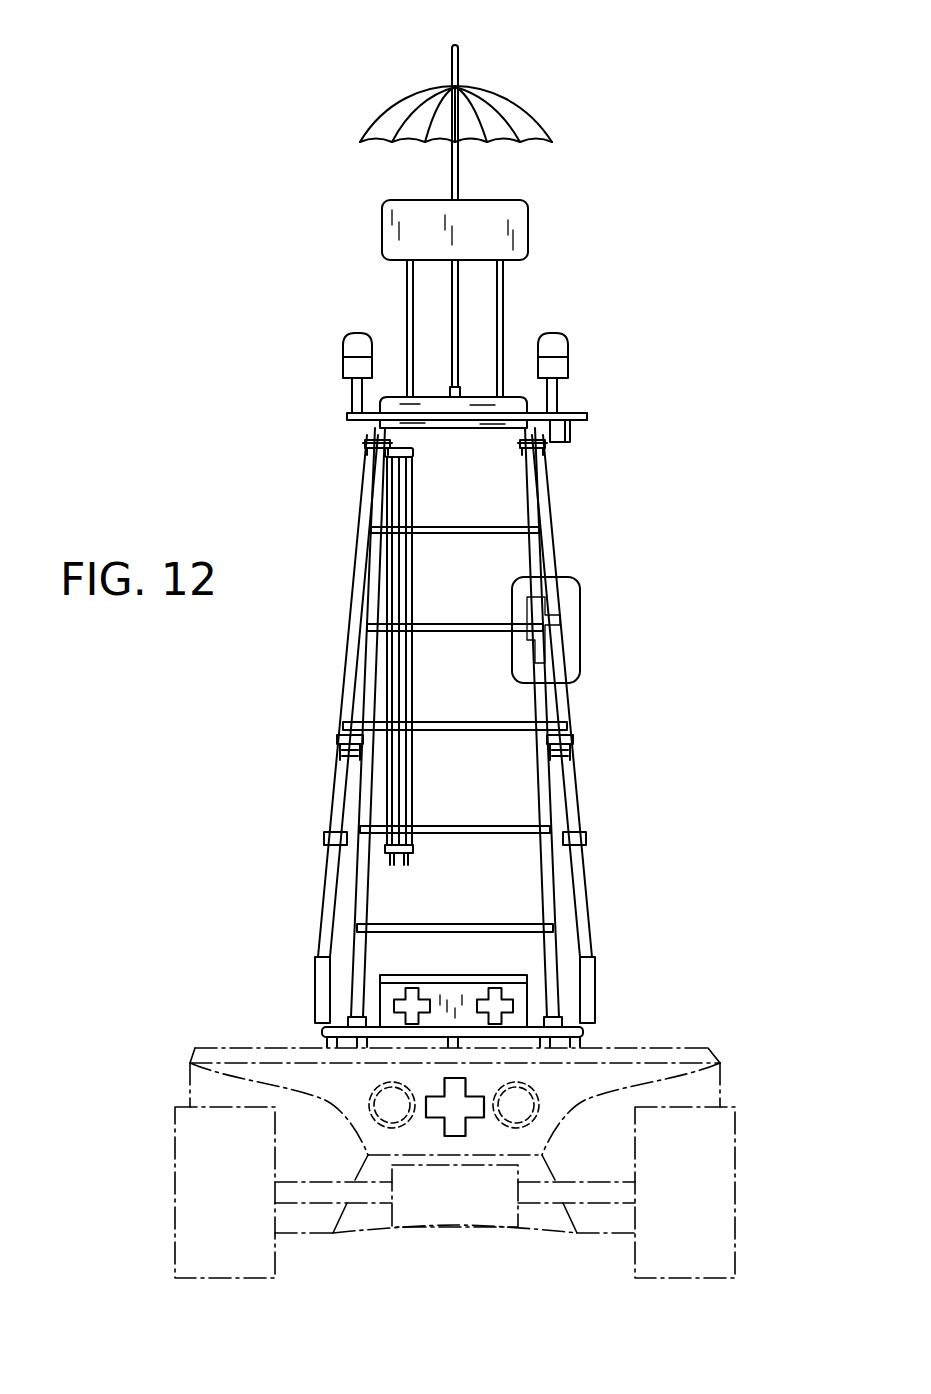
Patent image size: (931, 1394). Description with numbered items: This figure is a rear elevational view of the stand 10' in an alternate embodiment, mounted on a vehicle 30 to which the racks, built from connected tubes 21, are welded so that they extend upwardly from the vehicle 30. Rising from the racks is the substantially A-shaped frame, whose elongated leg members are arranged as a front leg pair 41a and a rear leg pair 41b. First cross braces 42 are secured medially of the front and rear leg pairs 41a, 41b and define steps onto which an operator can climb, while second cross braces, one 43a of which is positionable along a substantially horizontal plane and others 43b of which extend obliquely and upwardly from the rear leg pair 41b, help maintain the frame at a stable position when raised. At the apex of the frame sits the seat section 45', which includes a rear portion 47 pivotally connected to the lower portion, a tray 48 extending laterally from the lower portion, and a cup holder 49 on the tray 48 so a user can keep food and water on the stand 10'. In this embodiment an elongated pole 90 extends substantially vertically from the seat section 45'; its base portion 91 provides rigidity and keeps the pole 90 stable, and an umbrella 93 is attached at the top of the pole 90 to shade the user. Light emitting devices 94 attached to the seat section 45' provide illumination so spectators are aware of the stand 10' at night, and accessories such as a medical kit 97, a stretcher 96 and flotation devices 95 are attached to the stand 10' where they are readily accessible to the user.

The stand 10' is at (150, 84).
The umbrella 93 is at (408, 97).
The elongated pole 90 is at (452, 172).
The rear portion 47 is at (505, 248).
The base portion 91 is at (385, 300).
The seat section 45' is at (467, 348).
The light emitting devices 94 is at (343, 372).
The tray 48 is at (588, 413).
The cup holder 49 is at (572, 432).
The second cross braces 43b is at (545, 475).
The front leg pair 41a is at (543, 913).
The rear leg pair 41b is at (325, 870).
The second cross brace 43a is at (347, 735).
The first cross braces 42 is at (485, 623).
The stretcher 96 is at (430, 695).
The flotation devices 95 is at (580, 600).
The connected tubes 21 is at (318, 967).
The medical kit 97 is at (380, 997).
The vehicle 30 is at (687, 1048).